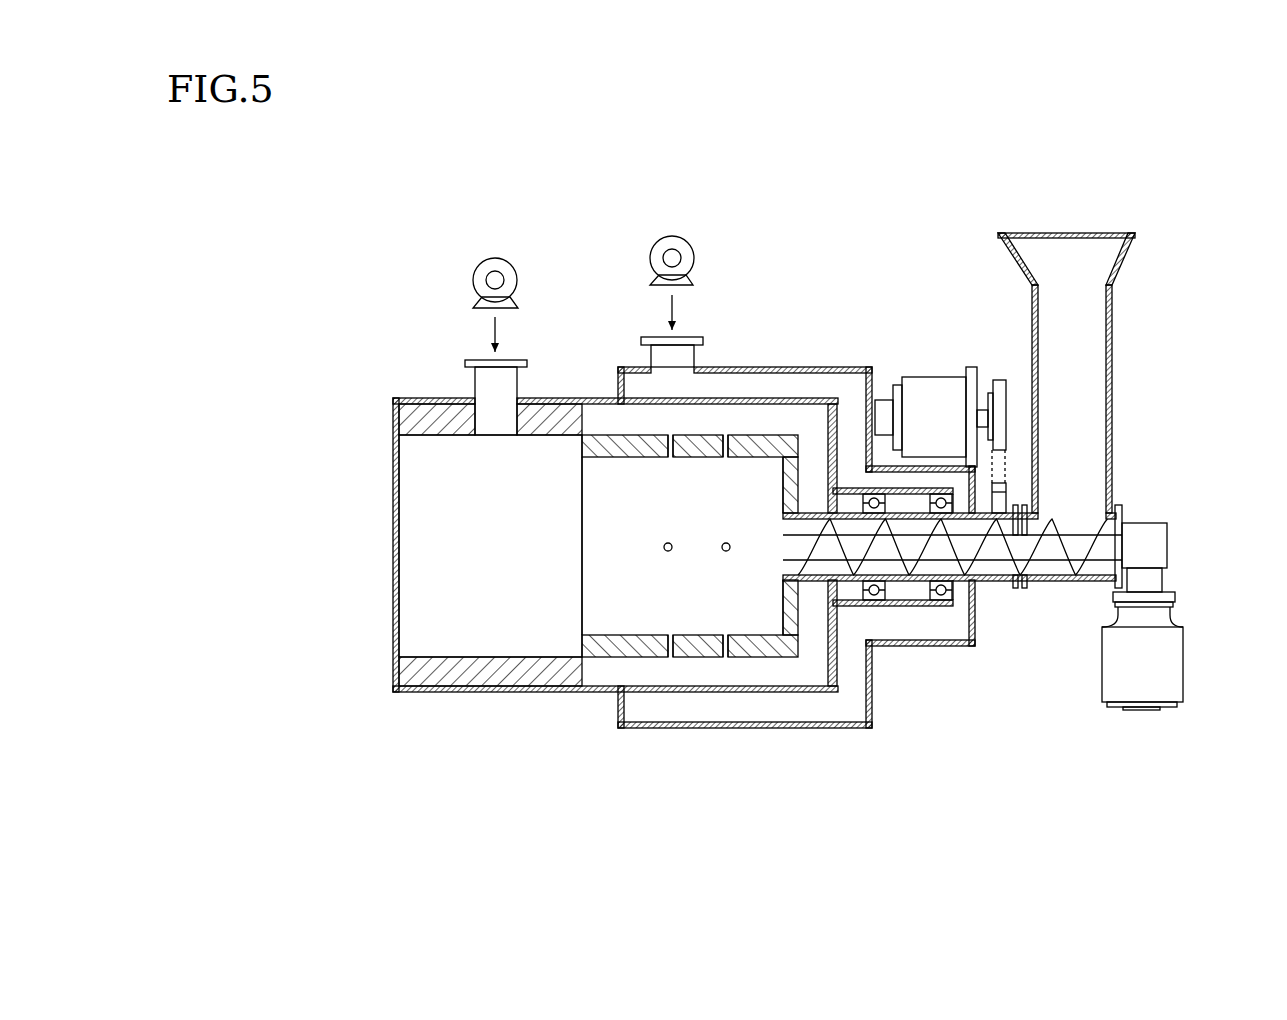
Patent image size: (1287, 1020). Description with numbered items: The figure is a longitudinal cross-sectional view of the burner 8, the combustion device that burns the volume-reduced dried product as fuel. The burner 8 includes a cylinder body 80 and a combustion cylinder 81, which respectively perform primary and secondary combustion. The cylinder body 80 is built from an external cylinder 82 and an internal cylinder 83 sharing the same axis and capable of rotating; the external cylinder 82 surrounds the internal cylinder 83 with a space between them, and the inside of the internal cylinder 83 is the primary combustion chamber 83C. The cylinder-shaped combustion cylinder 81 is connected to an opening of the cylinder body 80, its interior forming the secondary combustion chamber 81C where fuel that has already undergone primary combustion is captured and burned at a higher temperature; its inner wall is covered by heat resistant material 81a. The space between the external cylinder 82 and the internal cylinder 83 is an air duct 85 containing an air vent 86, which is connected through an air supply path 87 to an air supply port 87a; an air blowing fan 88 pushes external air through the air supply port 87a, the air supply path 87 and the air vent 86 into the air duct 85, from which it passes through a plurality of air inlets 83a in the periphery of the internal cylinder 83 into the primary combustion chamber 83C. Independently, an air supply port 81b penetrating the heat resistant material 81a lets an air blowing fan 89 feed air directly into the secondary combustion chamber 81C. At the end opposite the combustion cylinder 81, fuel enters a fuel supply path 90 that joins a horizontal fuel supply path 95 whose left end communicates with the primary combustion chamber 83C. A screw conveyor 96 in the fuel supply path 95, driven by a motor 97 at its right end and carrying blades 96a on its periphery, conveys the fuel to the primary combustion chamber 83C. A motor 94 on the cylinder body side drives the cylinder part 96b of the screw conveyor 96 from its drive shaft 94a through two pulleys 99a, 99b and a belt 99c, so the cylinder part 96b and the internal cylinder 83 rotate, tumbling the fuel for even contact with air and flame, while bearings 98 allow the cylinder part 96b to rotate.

The burner 8 is at (591, 163).
The cylinder body 80 is at (679, 698).
The combustion cylinder 81 is at (438, 552).
The secondary combustion chamber 81C is at (511, 543).
The heat resistant material 81a is at (425, 680).
The air supply port 81b is at (487, 392).
The external cylinder 82 is at (553, 398).
The internal cylinder 83 is at (690, 611).
The primary combustion chamber 83C is at (649, 515).
The air inlets 83a is at (724, 636).
The air duct 85 is at (742, 420).
The air vent 86 is at (830, 617).
The air supply path 87 is at (805, 386).
The air supply port 87a is at (699, 337).
The air blowing fan 88 is at (653, 243).
The air blowing fan 89 is at (477, 278).
The fuel supply path 90 is at (1070, 315).
The motor 94 is at (928, 390).
The drive shaft 94a is at (983, 410).
The fuel supply path 95 is at (985, 581).
The screw conveyor 96 is at (970, 543).
The blades 96a is at (1065, 580).
The cylinder part 96b is at (953, 582).
The motor 97 is at (1165, 680).
The bearings 98 is at (948, 606).
The pulley 99a is at (998, 382).
The pulley 99b is at (1005, 600).
The belt 99c is at (1008, 466).